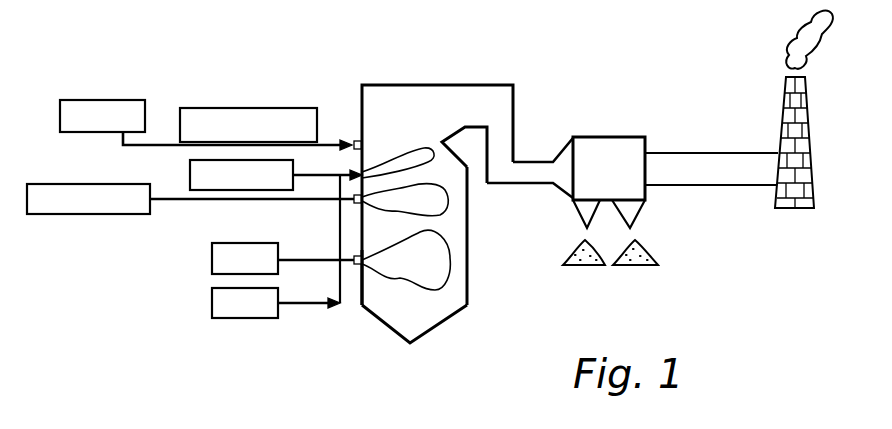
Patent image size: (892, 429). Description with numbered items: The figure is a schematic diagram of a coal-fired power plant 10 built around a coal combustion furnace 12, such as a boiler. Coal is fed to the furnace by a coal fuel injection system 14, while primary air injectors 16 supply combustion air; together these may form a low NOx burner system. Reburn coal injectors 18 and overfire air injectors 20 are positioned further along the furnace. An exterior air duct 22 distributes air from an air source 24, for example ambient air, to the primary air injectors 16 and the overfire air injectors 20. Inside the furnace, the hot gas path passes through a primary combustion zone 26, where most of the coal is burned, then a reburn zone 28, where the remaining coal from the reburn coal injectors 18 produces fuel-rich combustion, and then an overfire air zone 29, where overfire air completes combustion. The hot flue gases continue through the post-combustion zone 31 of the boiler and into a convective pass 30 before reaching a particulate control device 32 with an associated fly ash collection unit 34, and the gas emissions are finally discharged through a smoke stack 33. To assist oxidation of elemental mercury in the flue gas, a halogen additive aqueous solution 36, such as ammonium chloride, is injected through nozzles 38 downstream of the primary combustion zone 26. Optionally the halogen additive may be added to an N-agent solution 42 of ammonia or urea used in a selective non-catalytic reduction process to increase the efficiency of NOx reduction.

The coal-fired power plant 10 is at (657, 46).
The coal combustion furnace 12 is at (424, 318).
The coal fuel injection system 14 is at (212, 262).
The primary air injectors 16 is at (345, 306).
The reburn coal injectors 18 is at (73, 214).
The overfire air injectors 20 is at (190, 172).
The exterior air duct 22 is at (340, 222).
The air source 24 is at (240, 318).
The primary combustion zone 26 is at (440, 258).
The reburn zone 28 is at (437, 200).
The overfire air zone 29 is at (412, 150).
The convective pass 30 is at (532, 168).
The post-combustion zone 31 is at (446, 105).
The particulate control device 32 is at (607, 147).
The smoke stack 33 is at (803, 128).
The fly ash collection unit 34 is at (640, 242).
The halogen additive aqueous solution 36 is at (253, 108).
The nozzles 38 is at (356, 141).
The N-agent solution 42 is at (95, 100).